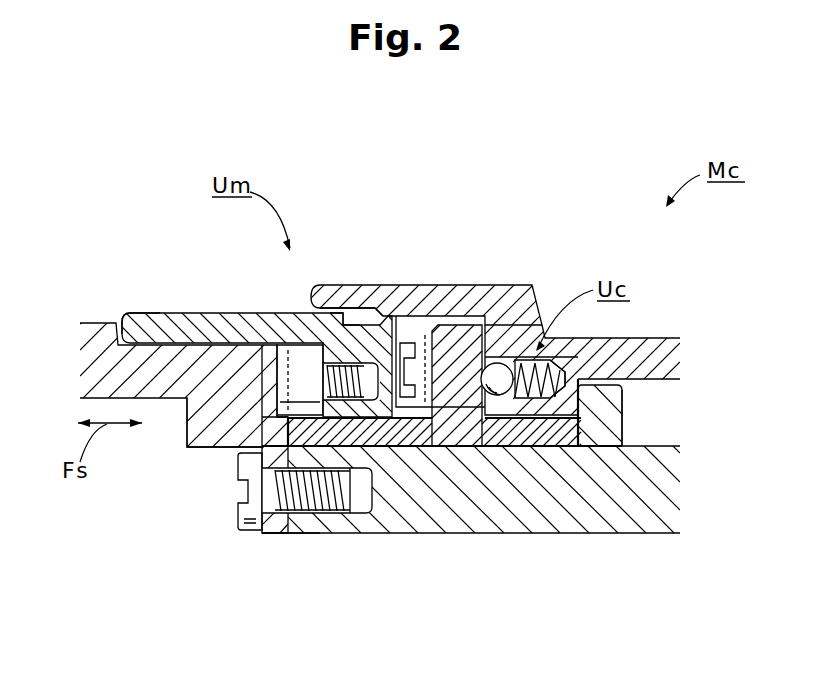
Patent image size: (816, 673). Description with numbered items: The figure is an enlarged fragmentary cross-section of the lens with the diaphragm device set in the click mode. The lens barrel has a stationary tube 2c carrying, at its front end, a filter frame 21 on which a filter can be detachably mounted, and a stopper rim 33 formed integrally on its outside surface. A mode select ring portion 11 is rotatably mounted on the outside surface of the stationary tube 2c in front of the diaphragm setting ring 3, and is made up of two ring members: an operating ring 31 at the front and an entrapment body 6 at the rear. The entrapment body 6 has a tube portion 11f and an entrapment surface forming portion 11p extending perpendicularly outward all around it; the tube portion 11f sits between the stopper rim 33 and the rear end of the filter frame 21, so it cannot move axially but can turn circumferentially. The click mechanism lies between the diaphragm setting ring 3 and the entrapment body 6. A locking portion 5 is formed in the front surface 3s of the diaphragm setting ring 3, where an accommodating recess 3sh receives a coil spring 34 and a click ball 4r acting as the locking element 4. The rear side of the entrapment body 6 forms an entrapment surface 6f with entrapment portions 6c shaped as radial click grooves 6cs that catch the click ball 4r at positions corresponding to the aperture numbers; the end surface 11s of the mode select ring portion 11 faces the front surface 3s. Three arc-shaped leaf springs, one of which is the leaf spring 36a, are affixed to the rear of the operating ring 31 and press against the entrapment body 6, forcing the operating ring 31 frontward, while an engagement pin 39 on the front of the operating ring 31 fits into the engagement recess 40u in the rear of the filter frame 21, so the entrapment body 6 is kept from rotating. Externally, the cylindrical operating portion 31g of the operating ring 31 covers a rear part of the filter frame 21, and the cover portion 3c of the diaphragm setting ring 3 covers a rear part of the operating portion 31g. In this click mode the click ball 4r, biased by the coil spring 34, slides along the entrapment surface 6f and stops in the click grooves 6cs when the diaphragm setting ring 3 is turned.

The filter frame 21 is at (86, 322).
The mode select ring portion 11 is at (270, 313).
The operating portion 31g is at (140, 313).
The operating ring 31 is at (347, 308).
The engagement pin 39 is at (280, 378).
The diaphragm setting ring 3 is at (410, 283).
The cover portion 3c is at (372, 312).
The end surface 11s is at (484, 332).
The entrapment surface forming portion 11p is at (462, 325).
The leaf spring 36a is at (372, 447).
The front surface 3s is at (478, 447).
The coil spring 34 is at (548, 338).
The entrapment surface 6f is at (487, 355).
The locking element 4 is at (548, 398).
The click ball 4r is at (557, 379).
The entrapment body 6 is at (445, 455).
The entrapment portion 6c is at (500, 362).
The click groove 6cs is at (494, 391).
The locking portion 5 is at (535, 410).
The stopper rim 33 is at (623, 419).
The accommodating recess 3sh is at (645, 447).
The stationary tube 2c is at (300, 535).
The engagement recess 40u is at (202, 447).
The tube portion 11f is at (330, 470).